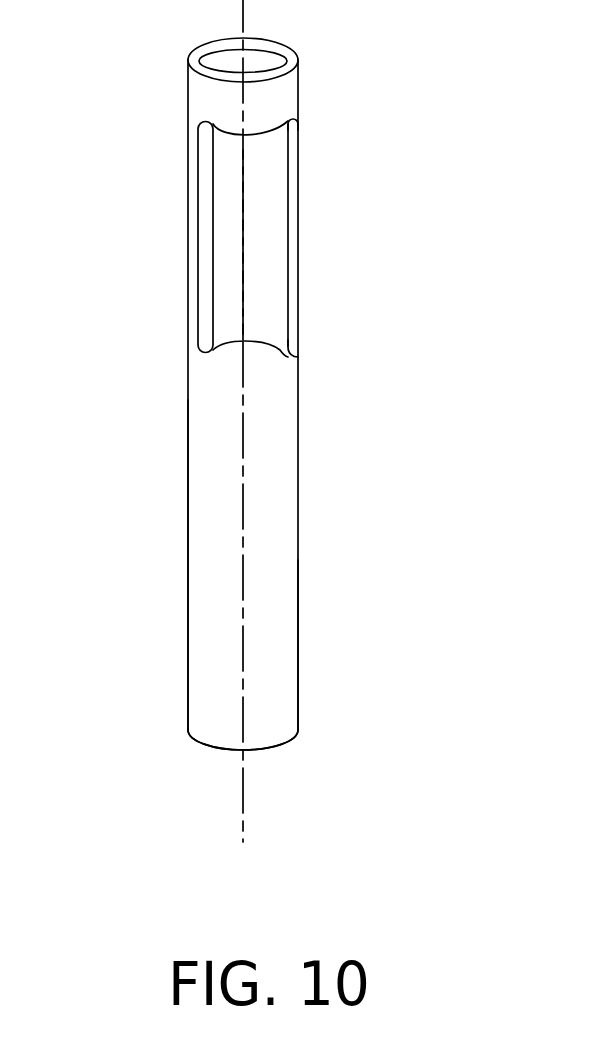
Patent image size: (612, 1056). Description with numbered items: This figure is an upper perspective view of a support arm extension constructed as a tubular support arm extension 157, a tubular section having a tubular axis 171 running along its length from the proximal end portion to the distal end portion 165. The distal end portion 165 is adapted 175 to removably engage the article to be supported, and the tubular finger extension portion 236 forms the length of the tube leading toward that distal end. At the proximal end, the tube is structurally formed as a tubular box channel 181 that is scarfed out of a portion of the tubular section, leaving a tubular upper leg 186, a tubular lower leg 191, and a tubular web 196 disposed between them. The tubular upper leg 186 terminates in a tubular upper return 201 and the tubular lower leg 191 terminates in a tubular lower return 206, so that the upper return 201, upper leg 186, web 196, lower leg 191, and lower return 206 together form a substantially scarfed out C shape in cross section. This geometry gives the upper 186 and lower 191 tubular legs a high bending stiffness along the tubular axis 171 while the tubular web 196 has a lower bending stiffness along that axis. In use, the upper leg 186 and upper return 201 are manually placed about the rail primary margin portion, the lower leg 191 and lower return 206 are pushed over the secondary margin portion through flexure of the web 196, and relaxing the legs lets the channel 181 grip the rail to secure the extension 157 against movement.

The tubular support arm extension 157 is at (298, 508).
The distal end portion 165 is at (223, 750).
The tubular axis 171 is at (245, 797).
The adaptation of the distal end portion to removably engage the article 175 is at (188, 681).
The box channel of the tubular support arm extension 181 is at (290, 155).
The tubular upper leg 186 is at (290, 121).
The tubular lower leg 191 is at (289, 358).
The tubular web 196 is at (243, 255).
The tubular upper return 201 is at (262, 133).
The tubular lower return 206 is at (208, 352).
The tubular finger extension portion 236 is at (298, 608).